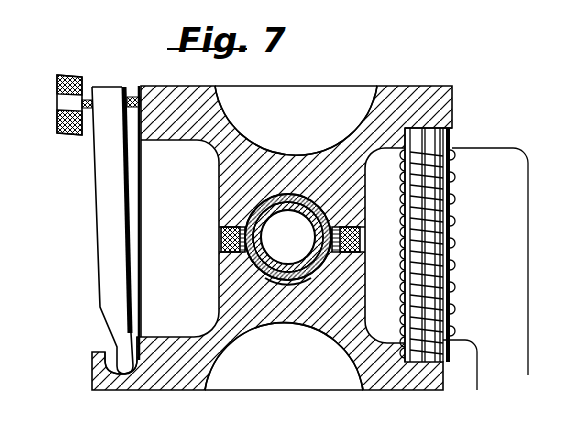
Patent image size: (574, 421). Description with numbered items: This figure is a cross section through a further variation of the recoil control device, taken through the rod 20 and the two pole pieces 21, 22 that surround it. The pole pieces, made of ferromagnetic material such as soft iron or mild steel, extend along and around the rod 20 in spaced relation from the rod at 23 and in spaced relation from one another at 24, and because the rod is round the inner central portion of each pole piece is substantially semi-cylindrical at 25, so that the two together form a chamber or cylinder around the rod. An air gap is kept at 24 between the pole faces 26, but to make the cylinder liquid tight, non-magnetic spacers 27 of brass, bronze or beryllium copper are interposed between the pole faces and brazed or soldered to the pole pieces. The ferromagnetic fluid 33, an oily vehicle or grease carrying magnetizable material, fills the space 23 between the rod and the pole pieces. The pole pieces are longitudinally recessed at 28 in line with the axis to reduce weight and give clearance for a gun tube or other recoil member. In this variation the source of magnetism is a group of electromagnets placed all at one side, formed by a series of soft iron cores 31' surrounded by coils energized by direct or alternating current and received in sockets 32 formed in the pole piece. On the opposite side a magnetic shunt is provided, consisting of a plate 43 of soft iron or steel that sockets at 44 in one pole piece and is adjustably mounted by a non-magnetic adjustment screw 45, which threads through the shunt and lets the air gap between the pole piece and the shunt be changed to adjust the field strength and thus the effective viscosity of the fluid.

The rod 20 is at (309, 228).
The pole piece 21 is at (448, 110).
The pole piece 22 is at (477, 390).
The space between rod and pole pieces 23 is at (304, 204).
The air gap between pole pieces 24 is at (221, 231).
The semi-cylindrical inner central portion 25 is at (275, 198).
The pole faces 26 is at (222, 256).
The spacers 27 is at (361, 247).
The longitudinal recess 28 is at (317, 107).
The soft iron cores 31' is at (451, 245).
The sockets 32 is at (449, 125).
The ferromagnetic fluid 33 is at (297, 283).
The shunt plate 43 is at (102, 215).
The shunt socket 44 is at (110, 353).
The adjustment screw 45 is at (82, 100).